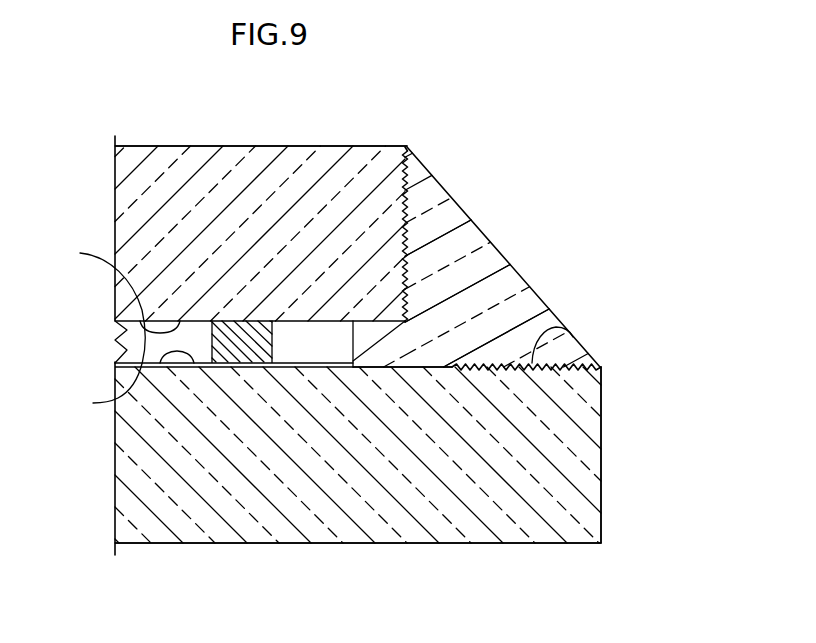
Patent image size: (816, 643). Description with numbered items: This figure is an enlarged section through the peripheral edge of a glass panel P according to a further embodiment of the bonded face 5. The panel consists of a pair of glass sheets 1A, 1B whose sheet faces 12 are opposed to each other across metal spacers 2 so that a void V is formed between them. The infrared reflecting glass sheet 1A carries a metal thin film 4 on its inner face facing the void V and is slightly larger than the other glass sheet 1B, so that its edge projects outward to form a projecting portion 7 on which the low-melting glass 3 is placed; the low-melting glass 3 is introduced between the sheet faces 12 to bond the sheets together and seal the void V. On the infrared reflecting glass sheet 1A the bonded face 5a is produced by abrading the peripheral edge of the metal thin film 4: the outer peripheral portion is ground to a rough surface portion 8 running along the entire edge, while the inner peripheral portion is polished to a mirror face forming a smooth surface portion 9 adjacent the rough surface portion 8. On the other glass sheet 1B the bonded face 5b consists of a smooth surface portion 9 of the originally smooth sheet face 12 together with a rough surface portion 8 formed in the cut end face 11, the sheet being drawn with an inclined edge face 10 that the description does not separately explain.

The infrared reflecting glass sheet 1A is at (127, 522).
The other glass sheet 1B is at (140, 153).
The metal spacer 2 is at (277, 344).
The low-melting glass 3 is at (437, 367).
The metal thin film 4 is at (140, 318).
The bonded face 5 is at (555, 258).
The bonded face of the infrared reflecting glass sheet 5a is at (658, 265).
The bonded face of the other glass sheet 5b is at (540, 150).
The projecting portion 7 is at (578, 545).
The rough surface portion 8 is at (427, 217).
The smooth surface portion 9 is at (383, 323).
The inclined surface 10 is at (418, 156).
The cut end face 11 is at (408, 219).
The sheet face 12 is at (94, 329).
The glass panel P is at (348, 145).
The void V is at (138, 356).